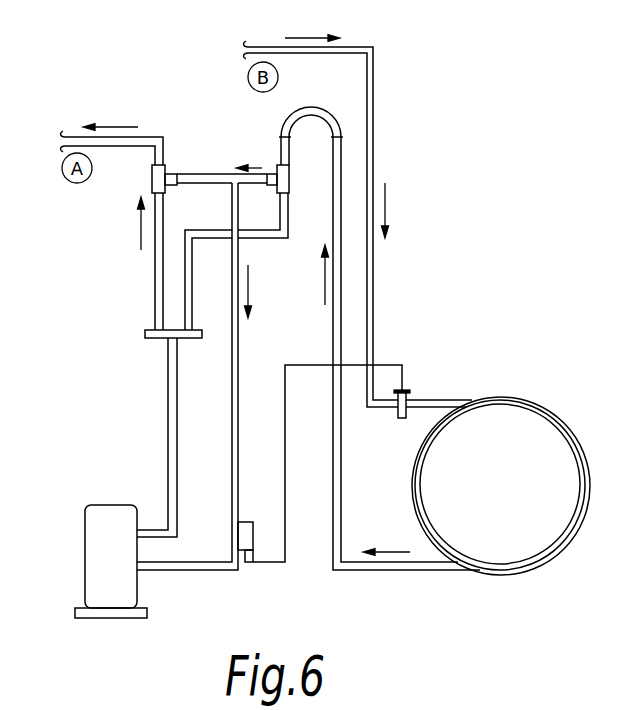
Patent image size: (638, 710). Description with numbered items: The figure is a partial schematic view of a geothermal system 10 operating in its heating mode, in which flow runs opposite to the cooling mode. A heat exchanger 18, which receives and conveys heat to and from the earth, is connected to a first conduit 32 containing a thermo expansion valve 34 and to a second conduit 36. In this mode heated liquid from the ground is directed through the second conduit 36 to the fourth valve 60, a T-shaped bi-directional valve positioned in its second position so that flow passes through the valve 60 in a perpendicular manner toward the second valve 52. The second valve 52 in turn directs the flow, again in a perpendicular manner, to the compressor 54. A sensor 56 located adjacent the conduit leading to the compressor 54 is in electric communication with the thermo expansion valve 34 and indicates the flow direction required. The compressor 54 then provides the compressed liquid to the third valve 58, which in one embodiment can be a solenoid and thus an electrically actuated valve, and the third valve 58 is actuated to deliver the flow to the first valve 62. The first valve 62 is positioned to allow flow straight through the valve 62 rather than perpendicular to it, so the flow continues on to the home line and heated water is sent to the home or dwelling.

The fluid system 10 is at (388, 96).
The heat exchanger 18 is at (540, 410).
The first conduit 32 is at (452, 398).
The thermo expansion valve 34 is at (410, 390).
The second conduit 36 is at (376, 571).
The second valve 52 is at (222, 173).
The compressor 54 is at (85, 578).
The sensor 56 is at (254, 542).
The third valve 58 is at (157, 338).
The fourth valve 60 is at (275, 167).
The first valve 62 is at (152, 178).